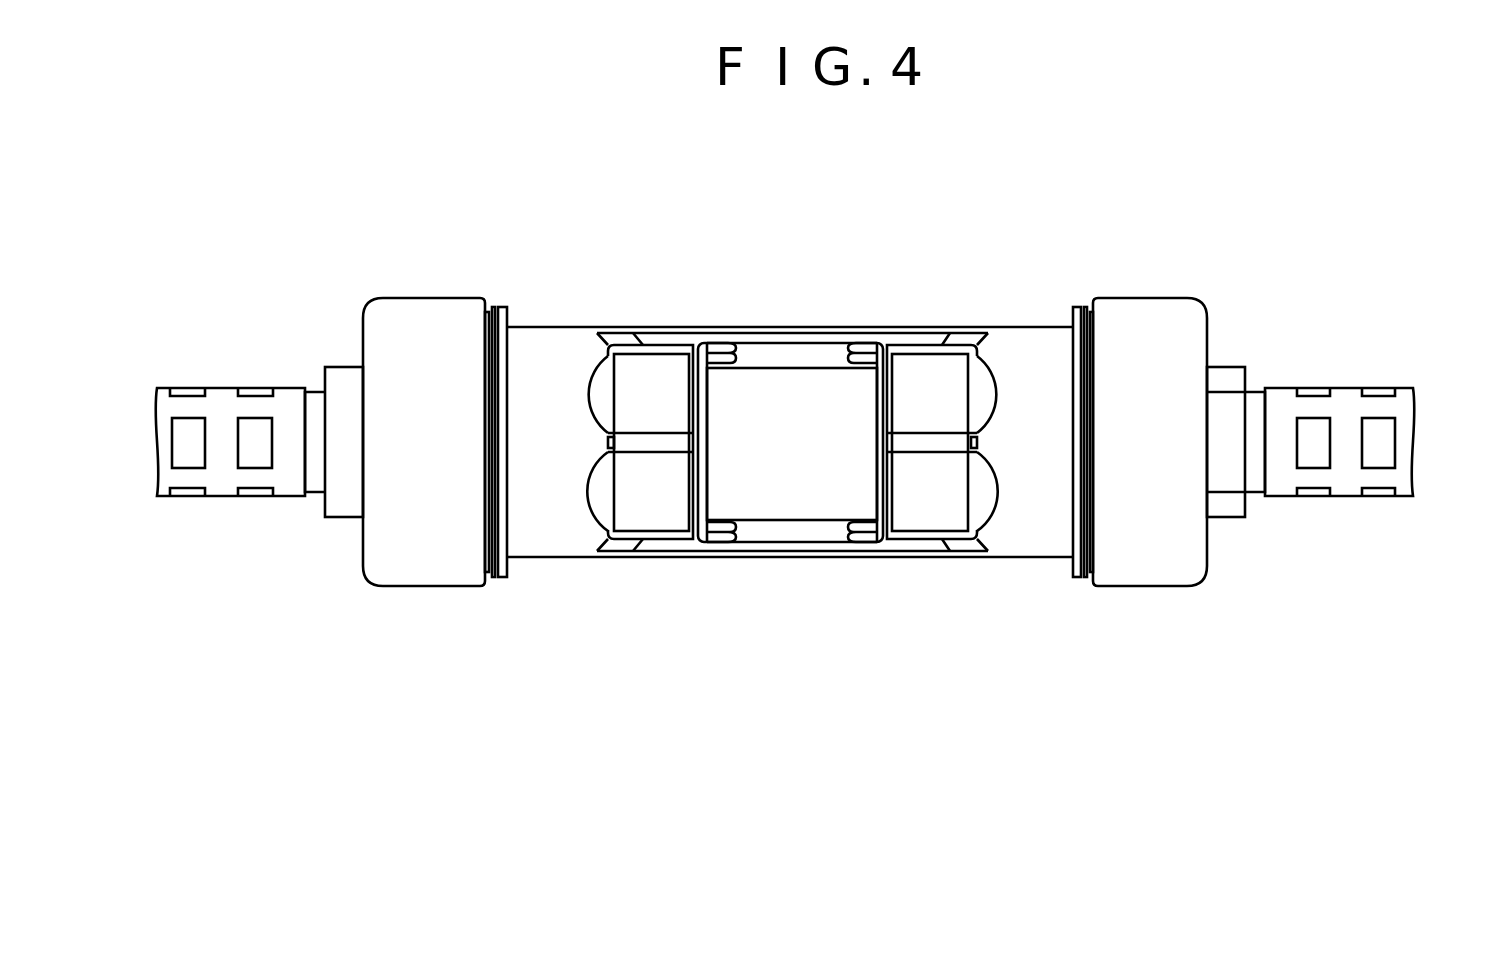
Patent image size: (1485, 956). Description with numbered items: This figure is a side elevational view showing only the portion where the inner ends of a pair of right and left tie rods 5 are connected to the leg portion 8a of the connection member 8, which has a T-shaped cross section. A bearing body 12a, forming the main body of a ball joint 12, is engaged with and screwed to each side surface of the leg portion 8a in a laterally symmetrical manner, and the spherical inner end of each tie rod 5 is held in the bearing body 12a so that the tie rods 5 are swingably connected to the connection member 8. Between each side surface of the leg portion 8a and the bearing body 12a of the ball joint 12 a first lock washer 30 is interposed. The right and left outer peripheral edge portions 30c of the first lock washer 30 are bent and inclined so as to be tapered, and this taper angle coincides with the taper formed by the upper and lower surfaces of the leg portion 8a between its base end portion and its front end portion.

The tie rod 5 is at (183, 497).
The connection member 8 is at (780, 558).
The leg portion 8a is at (805, 497).
The ball joint 12 is at (357, 585).
The bearing body 12a is at (455, 570).
The first lock washer 30 is at (877, 437).
The outer peripheral edge portion 30c is at (870, 348).